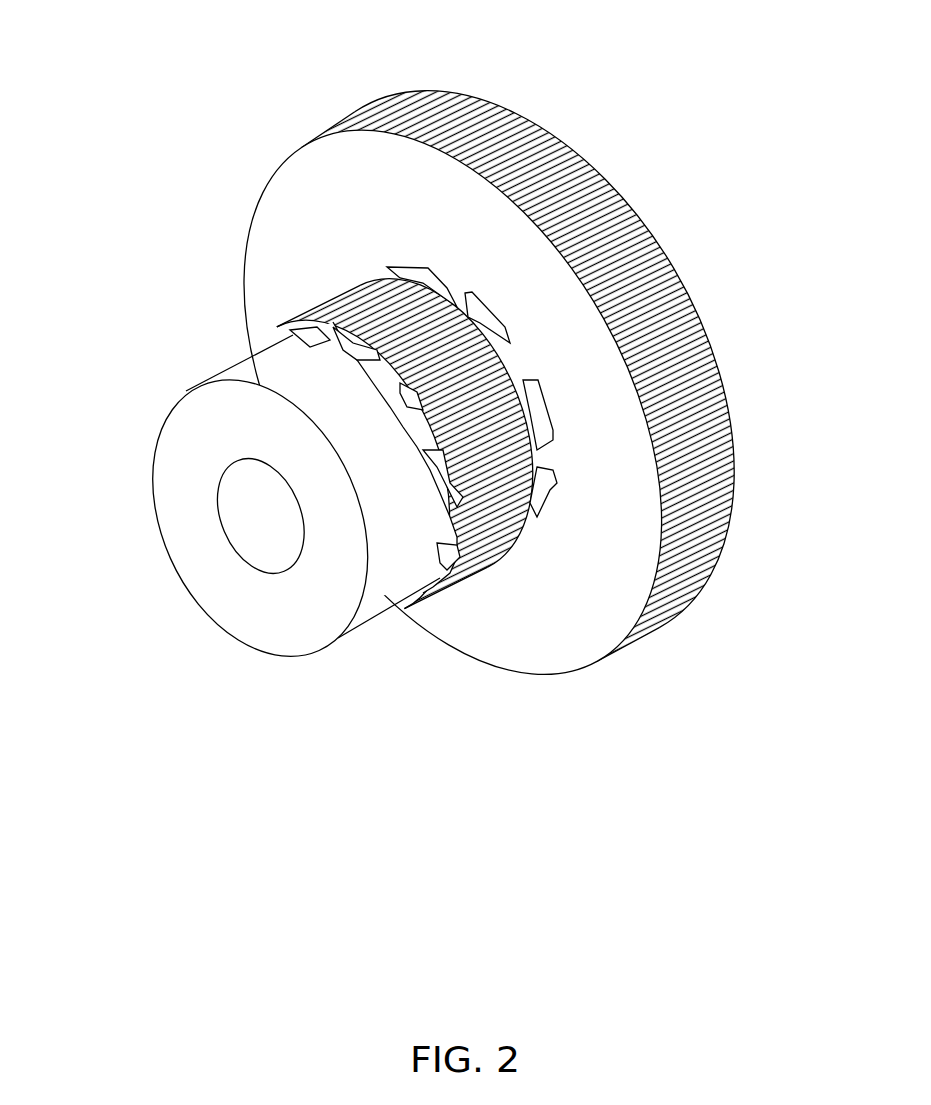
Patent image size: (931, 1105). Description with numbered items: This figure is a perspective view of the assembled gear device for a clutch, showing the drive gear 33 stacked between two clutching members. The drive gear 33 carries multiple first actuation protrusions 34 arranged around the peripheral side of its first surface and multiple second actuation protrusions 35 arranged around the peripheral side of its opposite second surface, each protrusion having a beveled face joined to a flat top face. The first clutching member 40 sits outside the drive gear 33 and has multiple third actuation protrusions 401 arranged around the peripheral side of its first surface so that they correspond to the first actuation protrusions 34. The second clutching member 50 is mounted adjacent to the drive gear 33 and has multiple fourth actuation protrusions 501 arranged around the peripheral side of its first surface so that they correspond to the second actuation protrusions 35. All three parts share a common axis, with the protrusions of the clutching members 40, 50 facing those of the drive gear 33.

The drive gear 33 is at (485, 304).
The first actuation protrusions 34 is at (350, 350).
The second actuation protrusions 35 is at (510, 357).
The first clutching member 40 is at (245, 536).
The third actuation protrusions 401 is at (380, 378).
The second clutching member 50 is at (520, 267).
The fourth actuation protrusions 501 is at (480, 320).